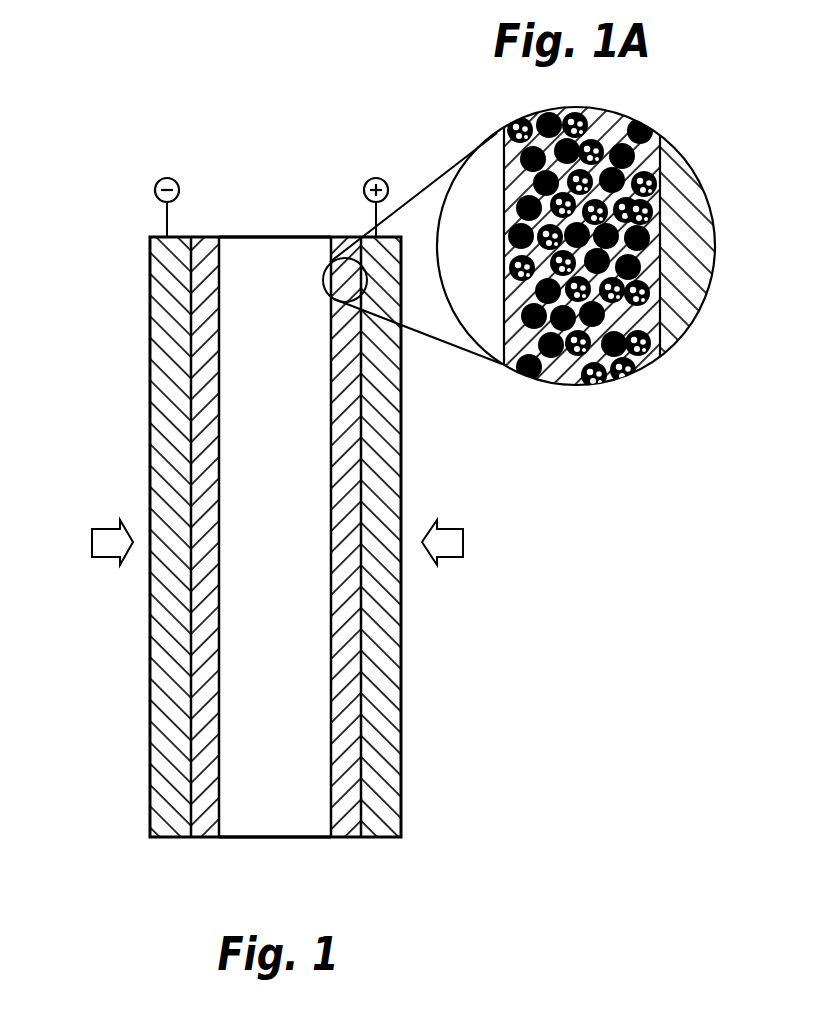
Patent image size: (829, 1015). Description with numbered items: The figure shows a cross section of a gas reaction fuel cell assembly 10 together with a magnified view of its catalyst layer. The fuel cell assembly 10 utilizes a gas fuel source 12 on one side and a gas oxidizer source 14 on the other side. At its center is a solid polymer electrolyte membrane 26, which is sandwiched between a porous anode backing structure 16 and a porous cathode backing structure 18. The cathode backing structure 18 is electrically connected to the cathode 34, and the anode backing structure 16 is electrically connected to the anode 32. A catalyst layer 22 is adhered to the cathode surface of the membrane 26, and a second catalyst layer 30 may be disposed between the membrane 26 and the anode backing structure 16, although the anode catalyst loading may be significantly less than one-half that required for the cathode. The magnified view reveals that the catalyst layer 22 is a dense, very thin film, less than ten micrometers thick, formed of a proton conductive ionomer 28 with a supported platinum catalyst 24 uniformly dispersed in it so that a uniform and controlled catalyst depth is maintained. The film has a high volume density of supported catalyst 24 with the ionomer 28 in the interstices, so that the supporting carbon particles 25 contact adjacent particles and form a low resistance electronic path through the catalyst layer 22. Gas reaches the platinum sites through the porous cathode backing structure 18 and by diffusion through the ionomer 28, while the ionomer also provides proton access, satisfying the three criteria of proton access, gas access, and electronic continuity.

In FIG. 1, the fuel cell assembly 10 is at (265, 168).
In FIG. 1, the gas fuel source 12 is at (126, 514).
In FIG. 1, the gas oxidizer source 14 is at (463, 514).
In FIG. 1, the porous anode backing structure 16 is at (160, 632).
In FIG. 1, the porous cathode backing structure 18 is at (392, 617).
In FIG. 1A, the porous cathode backing structure 18 is at (661, 162).
In FIG. 1, the catalyst layer 22 is at (347, 817).
In FIG. 1A, the catalyst layer 22 is at (596, 382).
In FIG. 1A, the supported platinum catalyst 24 is at (645, 130).
In FIG. 1A, the supporting carbon particles 25 is at (615, 127).
In FIG. 1, the solid polymer electrolyte membrane 26 is at (272, 800).
In FIG. 1A, the solid polymer electrolyte membrane 26 is at (493, 262).
In FIG. 1A, the proton conductive ionomer 28 is at (713, 250).
In FIG. 1, the catalyst layer 30 is at (212, 832).
In FIG. 1, the anode 32 is at (160, 205).
In FIG. 1, the cathode 34 is at (366, 196).